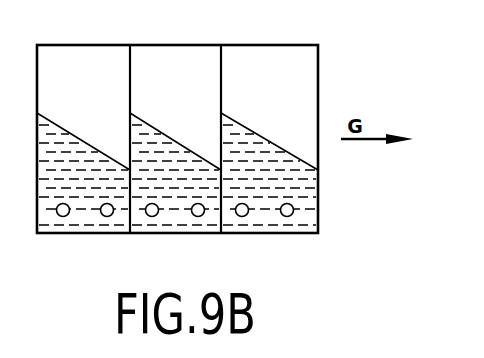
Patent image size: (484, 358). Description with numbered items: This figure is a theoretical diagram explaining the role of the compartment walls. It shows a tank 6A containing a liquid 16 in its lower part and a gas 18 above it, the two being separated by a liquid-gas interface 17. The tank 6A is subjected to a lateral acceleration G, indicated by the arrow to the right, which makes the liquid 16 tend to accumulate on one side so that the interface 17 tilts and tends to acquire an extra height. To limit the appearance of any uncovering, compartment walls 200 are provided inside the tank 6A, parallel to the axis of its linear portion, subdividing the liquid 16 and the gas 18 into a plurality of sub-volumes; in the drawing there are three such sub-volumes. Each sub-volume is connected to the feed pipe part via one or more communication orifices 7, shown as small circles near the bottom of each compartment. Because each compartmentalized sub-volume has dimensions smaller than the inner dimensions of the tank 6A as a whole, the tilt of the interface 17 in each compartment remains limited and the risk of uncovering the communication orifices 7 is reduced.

The tank 6A is at (78, 45).
The compartment wall 200 is at (220, 70).
The gas 18 is at (283, 60).
The liquid-gas interface 17 is at (80, 138).
The communication orifice 7 is at (108, 214).
The liquid 16 is at (263, 210).